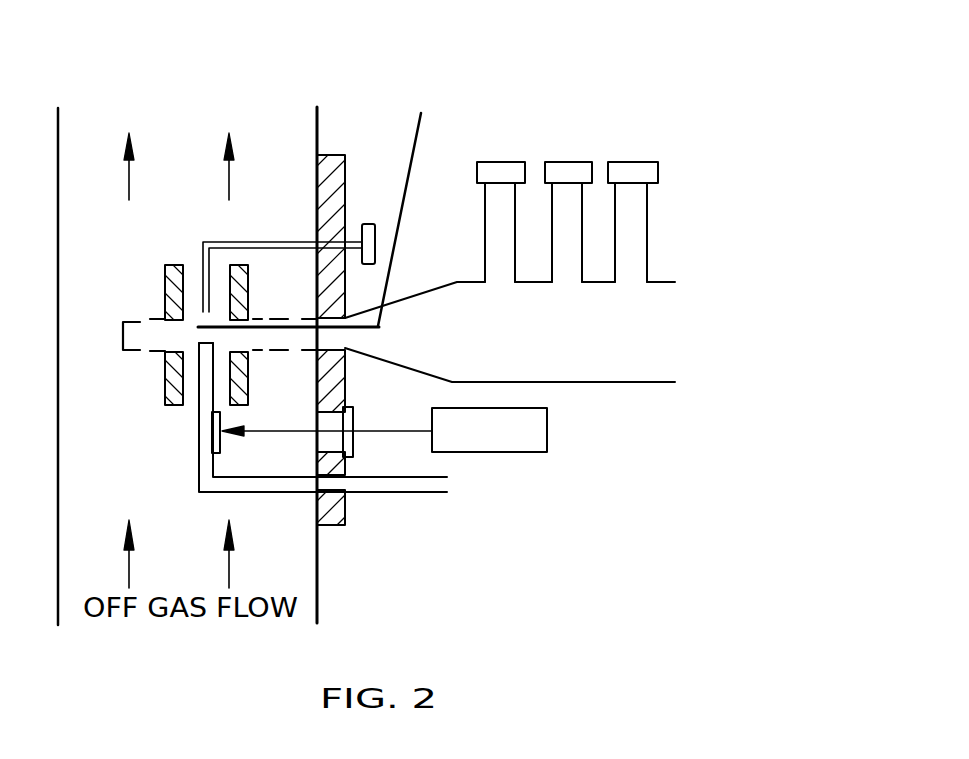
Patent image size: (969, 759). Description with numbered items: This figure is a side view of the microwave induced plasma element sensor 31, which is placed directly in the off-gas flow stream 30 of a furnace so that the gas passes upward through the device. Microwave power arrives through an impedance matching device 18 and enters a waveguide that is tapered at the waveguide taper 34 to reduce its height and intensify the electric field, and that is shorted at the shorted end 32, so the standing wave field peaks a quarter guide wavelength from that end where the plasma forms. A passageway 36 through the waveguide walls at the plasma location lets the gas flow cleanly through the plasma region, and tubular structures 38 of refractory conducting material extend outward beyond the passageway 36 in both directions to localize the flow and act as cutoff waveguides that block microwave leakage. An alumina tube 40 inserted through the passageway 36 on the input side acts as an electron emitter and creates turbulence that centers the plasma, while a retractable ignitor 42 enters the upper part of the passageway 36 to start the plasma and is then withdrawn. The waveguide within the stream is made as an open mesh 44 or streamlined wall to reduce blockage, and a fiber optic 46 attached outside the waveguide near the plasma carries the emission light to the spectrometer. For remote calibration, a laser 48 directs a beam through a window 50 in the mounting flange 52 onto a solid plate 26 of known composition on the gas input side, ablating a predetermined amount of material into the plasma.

The impedance matching device 18 is at (505, 162).
The solid plate 26 is at (213, 445).
The off-gas flow stream 30 is at (171, 164).
The microwave induced plasma element sensor 31 is at (386, 60).
The shorted end 32 is at (123, 338).
The waveguide taper 34 is at (417, 290).
The passageway 36 is at (191, 400).
The tubular structures 38 is at (165, 288).
The alumina tube 40 is at (222, 490).
The retractable ignitor 42 is at (203, 250).
The open mesh waveguide 44 is at (150, 352).
The fiber optic 46 is at (420, 124).
The laser 48 is at (550, 440).
The window 50 is at (355, 440).
The mounting flange 52 is at (345, 522).